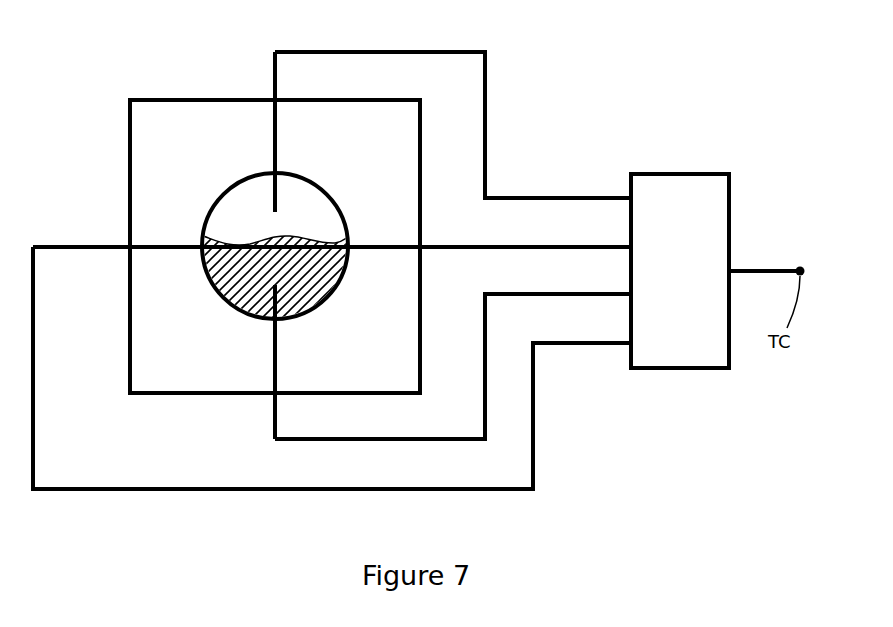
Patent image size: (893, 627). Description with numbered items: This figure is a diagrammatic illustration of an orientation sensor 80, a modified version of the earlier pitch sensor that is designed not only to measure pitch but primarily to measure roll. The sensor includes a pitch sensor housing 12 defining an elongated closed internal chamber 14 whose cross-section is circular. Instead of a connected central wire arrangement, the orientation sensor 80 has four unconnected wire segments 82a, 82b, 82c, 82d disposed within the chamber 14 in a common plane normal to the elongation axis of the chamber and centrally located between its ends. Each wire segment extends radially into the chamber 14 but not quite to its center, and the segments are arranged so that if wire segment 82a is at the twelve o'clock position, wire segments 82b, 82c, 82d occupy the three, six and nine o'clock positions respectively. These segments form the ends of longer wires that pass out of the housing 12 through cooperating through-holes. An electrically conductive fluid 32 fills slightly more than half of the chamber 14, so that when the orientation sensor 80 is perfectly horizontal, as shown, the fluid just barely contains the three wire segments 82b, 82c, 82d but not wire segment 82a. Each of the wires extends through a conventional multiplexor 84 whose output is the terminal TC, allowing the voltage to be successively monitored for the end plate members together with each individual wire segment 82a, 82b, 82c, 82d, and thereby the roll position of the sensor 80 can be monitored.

The orientation sensor 80 is at (160, 82).
The pitch sensor housing 12 is at (400, 150).
The internal chamber 14 is at (303, 200).
The electrically conductive fluid 32 is at (230, 287).
The wire segment 82a is at (270, 192).
The wire segment 82b is at (328, 240).
The wire segment 82c is at (276, 302).
The wire segment 82d is at (218, 238).
The multiplexor 84 is at (675, 203).